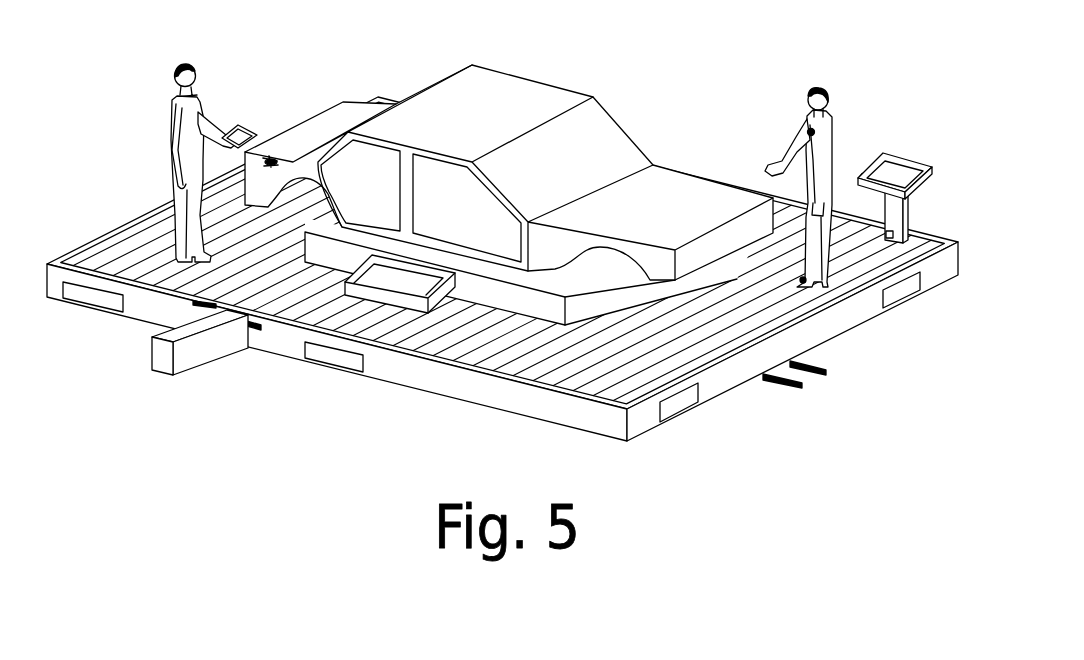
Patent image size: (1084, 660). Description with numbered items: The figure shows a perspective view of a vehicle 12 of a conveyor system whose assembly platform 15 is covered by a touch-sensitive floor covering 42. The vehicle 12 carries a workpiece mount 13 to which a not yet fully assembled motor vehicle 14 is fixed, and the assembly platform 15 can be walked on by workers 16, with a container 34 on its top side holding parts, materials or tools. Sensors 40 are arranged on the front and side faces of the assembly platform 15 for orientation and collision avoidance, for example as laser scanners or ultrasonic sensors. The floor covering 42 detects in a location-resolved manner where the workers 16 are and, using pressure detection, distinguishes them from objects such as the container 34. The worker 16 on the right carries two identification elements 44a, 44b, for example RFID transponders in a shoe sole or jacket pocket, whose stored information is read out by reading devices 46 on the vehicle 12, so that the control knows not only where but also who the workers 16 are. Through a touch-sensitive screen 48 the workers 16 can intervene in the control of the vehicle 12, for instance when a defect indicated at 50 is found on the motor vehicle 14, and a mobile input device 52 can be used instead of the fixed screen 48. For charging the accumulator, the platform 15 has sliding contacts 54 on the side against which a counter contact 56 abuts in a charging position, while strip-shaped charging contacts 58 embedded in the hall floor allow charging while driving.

The vehicle 12 is at (502, 233).
The workpiece mount 13 is at (543, 305).
The motor vehicle 14 is at (509, 151).
The assembly platform 15 is at (502, 279).
The worker 16 is at (182, 103).
The container 34 is at (418, 302).
The sensor 40 is at (332, 357).
The touch-sensitive floor covering 42 is at (127, 235).
The identification element 44a is at (806, 282).
The identification element 44b is at (810, 132).
The reading device 46 is at (860, 178).
The touch-sensitive screen 48 is at (905, 167).
The defect 50 is at (270, 157).
The mobile input device 52 is at (242, 130).
The sliding contact 54 is at (243, 328).
The counter contact 56 is at (187, 355).
The charging contact 58 is at (788, 389).